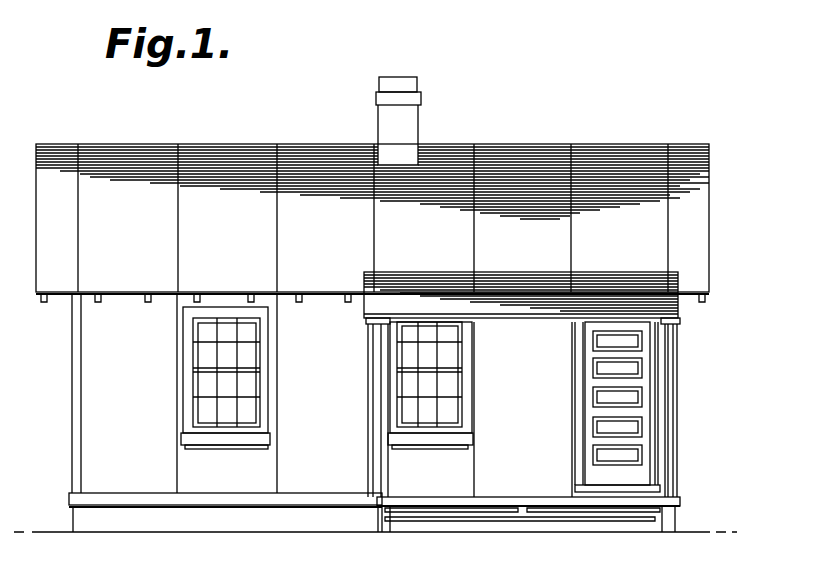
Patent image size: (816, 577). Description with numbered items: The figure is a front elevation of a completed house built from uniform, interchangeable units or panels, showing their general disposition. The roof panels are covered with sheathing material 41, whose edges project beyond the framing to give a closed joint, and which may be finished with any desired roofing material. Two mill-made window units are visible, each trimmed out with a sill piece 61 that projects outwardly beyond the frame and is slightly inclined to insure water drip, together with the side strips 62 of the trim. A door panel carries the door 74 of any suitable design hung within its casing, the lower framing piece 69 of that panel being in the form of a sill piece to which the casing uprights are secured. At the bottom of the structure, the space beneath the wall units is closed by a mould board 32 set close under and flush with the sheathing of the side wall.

The roof sheathing 41 is at (372, 223).
The side strips 62 is at (268, 392).
The sill piece 61 is at (232, 437).
The door 74 is at (647, 382).
The lower framing piece 69 is at (646, 487).
The mould board 32 is at (322, 520).